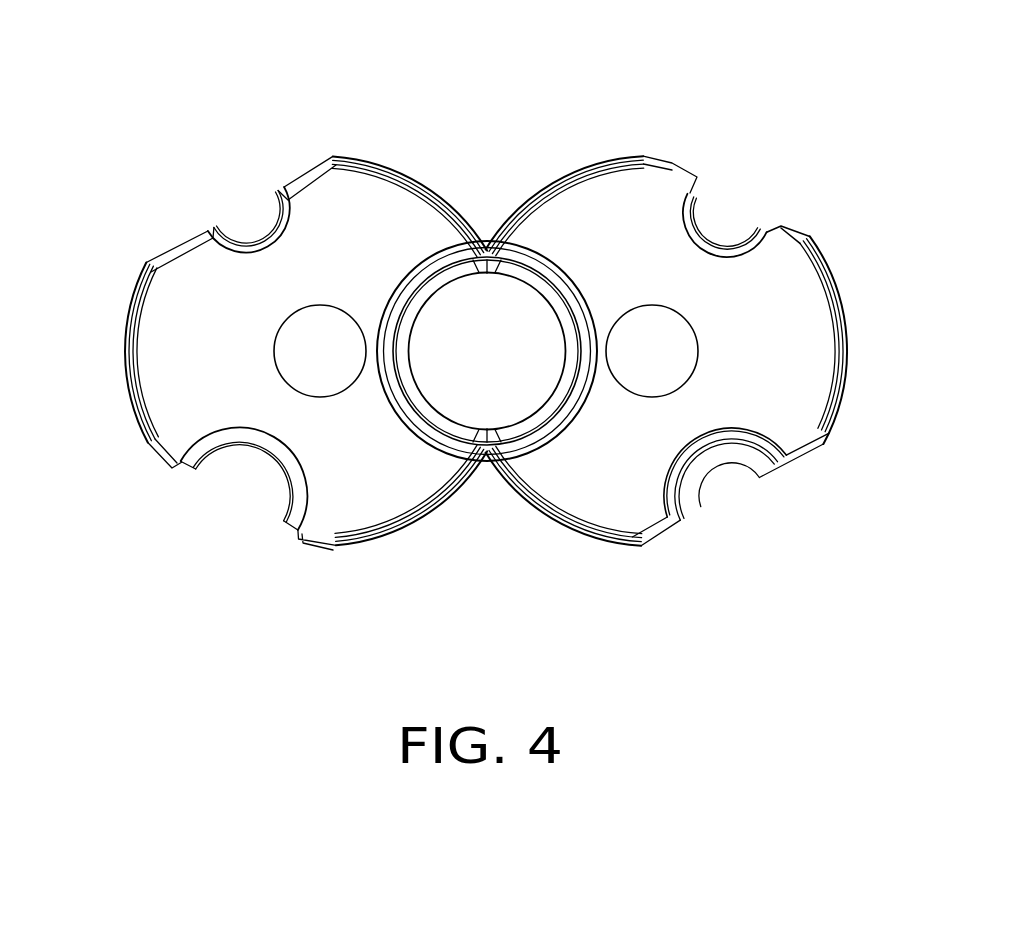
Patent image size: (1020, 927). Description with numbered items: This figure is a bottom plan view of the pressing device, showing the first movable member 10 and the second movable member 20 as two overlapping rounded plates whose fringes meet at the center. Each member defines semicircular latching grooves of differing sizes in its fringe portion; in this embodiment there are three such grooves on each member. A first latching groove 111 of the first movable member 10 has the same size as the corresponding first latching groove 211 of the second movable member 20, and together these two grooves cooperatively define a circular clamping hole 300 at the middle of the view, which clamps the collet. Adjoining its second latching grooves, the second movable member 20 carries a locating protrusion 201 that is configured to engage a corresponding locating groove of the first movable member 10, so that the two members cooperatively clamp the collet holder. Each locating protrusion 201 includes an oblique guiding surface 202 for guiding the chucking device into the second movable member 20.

The first movable member 10 is at (176, 344).
The second movable member 20 is at (698, 309).
The locating protrusion 201 is at (782, 240).
The oblique guiding surface 202 is at (780, 227).
The first latching groove 111 is at (432, 337).
The first latching groove 211 is at (537, 322).
The circular clamping hole 300 is at (500, 234).